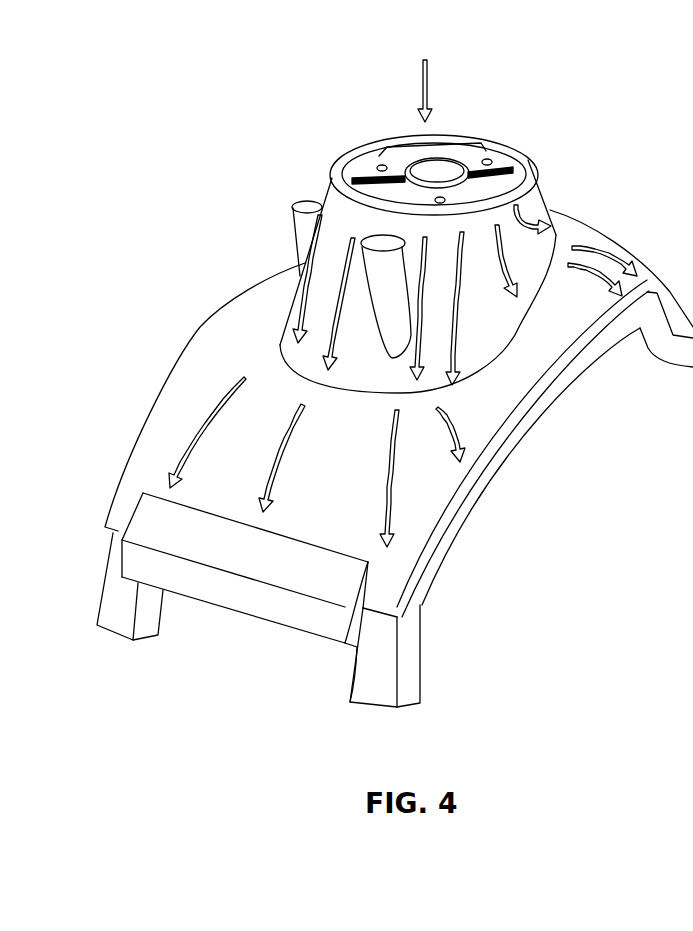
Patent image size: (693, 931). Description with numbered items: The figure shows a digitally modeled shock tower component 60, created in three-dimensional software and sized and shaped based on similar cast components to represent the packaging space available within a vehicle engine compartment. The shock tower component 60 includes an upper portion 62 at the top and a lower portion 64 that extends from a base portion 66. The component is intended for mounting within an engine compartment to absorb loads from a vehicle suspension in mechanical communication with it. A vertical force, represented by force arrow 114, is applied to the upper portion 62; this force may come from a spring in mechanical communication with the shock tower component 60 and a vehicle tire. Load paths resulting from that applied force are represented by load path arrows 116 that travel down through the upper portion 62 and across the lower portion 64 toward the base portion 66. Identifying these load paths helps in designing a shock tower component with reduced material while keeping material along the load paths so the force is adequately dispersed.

The shock tower component 60 is at (492, 102).
The upper portion 62 is at (330, 181).
The lower portion 64 is at (196, 333).
The base portion 66 is at (532, 437).
The force arrow 114 is at (418, 87).
The load path arrows 116 is at (350, 258).